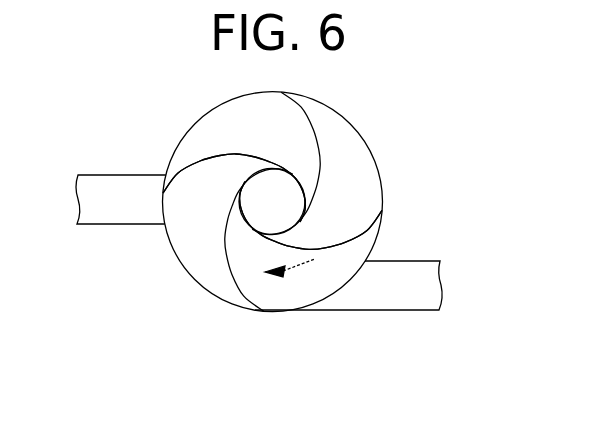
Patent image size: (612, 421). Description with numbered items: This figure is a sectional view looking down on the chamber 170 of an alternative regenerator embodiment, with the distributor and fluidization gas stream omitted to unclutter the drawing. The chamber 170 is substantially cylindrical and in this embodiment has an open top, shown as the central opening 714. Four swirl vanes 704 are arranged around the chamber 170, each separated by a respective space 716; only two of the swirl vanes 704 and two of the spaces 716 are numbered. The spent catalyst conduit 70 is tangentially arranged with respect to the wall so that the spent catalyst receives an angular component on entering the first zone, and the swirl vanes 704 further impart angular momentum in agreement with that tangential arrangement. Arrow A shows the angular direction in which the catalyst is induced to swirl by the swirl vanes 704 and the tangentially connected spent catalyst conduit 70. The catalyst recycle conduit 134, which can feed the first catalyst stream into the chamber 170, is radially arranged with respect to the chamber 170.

The chamber 170 is at (243, 92).
The swirl vanes 704 is at (193, 127).
The space 716 is at (347, 180).
The opening 714 is at (297, 210).
The catalyst recycle conduit 134 is at (97, 230).
The spent catalyst conduit 70 is at (393, 312).
The arrow A is at (300, 268).